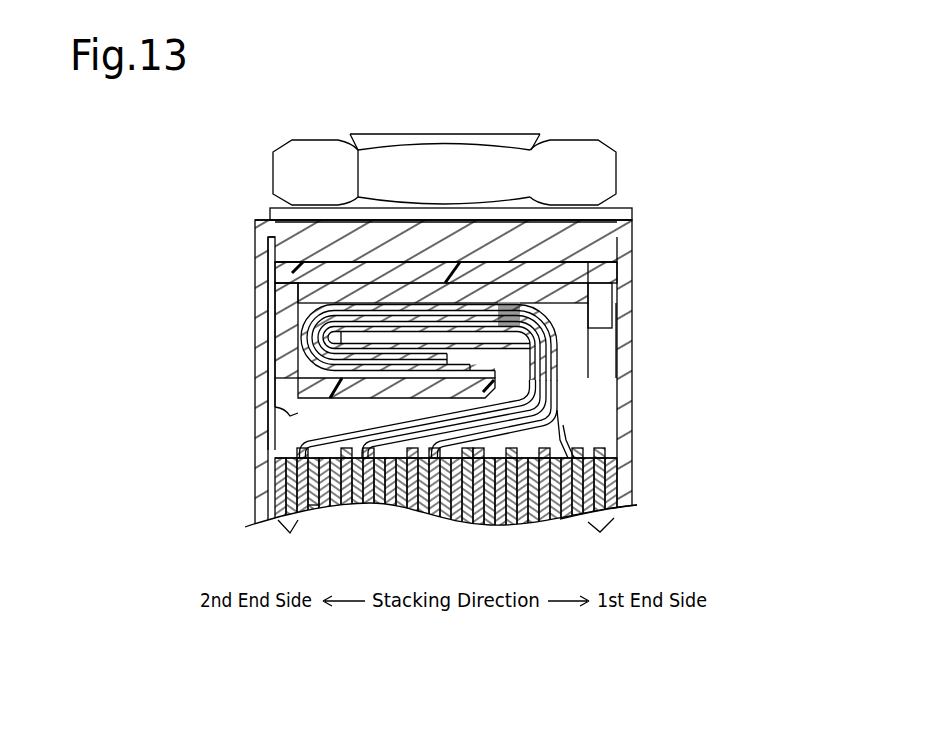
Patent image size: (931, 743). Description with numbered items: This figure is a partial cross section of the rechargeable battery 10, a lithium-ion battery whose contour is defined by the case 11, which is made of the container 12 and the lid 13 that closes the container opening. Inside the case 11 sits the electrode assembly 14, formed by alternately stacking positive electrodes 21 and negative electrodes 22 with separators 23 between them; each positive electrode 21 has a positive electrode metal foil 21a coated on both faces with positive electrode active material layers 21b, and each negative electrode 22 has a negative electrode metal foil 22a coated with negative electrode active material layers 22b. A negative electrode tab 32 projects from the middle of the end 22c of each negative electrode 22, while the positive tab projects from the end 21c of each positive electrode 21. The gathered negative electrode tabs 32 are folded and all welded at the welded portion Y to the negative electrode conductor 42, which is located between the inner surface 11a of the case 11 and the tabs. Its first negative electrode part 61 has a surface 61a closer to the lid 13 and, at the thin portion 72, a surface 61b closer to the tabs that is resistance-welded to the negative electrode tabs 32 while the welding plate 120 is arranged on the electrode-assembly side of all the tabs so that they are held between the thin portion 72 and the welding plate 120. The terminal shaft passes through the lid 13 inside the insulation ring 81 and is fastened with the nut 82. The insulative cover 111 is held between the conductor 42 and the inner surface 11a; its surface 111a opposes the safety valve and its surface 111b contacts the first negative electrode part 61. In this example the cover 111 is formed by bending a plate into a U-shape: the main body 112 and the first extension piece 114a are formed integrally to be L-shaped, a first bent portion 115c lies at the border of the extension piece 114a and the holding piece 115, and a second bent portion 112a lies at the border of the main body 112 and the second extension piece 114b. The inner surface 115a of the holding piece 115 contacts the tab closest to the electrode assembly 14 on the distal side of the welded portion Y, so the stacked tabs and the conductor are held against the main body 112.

The rechargeable battery 10 is at (226, 210).
The case 11 is at (692, 198).
The inner surface of the case 11a is at (578, 262).
The container 12 is at (632, 250).
The lid 13 is at (632, 228).
The electrode assembly 14 is at (620, 486).
The positive electrode 21 is at (602, 460).
The positive electrode metal foil 21a is at (634, 506).
The positive electrode active material layers 21b is at (600, 532).
The end of the positive electrode 21c is at (594, 457).
The negative electrode 22 is at (276, 470).
The negative electrode metal foil 22a is at (313, 507).
The negative electrode active material layers 22b is at (290, 533).
The end of the negative electrode 22c is at (278, 436).
The separator 23 is at (586, 518).
The negative electrode tab 32 is at (563, 433).
The negative electrode conductor 42 is at (300, 274).
The first negative electrode part 61 is at (282, 278).
The surface of the first negative electrode part closer to the lid 61a is at (287, 262).
The surface of the first negative electrode part closer to the negative electrode ta 61b is at (278, 319).
The thin portion 72 is at (274, 300).
The insulation ring 81 is at (627, 213).
The nut 82 is at (620, 153).
The cover 111 is at (614, 290).
The surface of the cover closer to the safety valve 111a is at (520, 270).
The surface of the cover closer to the conductors 111b is at (368, 283).
The main body 112 is at (441, 270).
The second bent portion 112a is at (594, 273).
The first extension piece 114a is at (283, 350).
The second extension piece 114b is at (620, 340).
The holding piece 115 is at (282, 420).
The inner surface of the holding piece 115a is at (280, 372).
The first bent portion 115c is at (268, 402).
The welding plate 120 is at (520, 342).
The welded portion Y is at (606, 286).